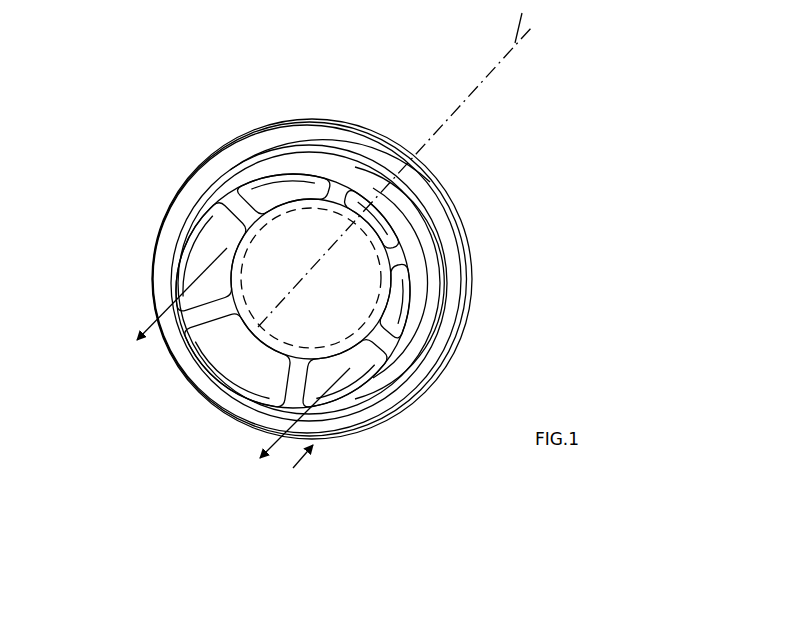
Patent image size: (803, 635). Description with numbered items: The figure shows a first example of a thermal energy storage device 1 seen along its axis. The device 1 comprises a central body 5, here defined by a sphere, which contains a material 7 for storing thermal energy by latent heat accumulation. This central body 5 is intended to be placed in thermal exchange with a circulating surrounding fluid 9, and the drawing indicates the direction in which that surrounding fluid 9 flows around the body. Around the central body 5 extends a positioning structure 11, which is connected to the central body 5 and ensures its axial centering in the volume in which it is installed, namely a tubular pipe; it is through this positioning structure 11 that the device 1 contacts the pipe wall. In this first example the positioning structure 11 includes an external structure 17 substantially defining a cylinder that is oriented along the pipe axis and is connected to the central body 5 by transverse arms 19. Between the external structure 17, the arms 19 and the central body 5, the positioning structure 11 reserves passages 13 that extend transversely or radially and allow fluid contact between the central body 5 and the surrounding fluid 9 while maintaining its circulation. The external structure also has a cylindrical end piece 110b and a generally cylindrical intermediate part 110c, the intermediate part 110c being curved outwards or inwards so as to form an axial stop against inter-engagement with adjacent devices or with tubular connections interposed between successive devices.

The device 1 is at (393, 103).
The central body 5 is at (282, 265).
The material for storing thermal energy 7 is at (288, 233).
The surrounding fluid 9 is at (135, 336).
The positioning structure 11 is at (297, 472).
The passages 13 is at (215, 237).
The external structure 17 is at (283, 128).
The transverse arms 19 is at (196, 318).
The cylindrical end piece 110b is at (462, 213).
The intermediate part 110c is at (318, 133).